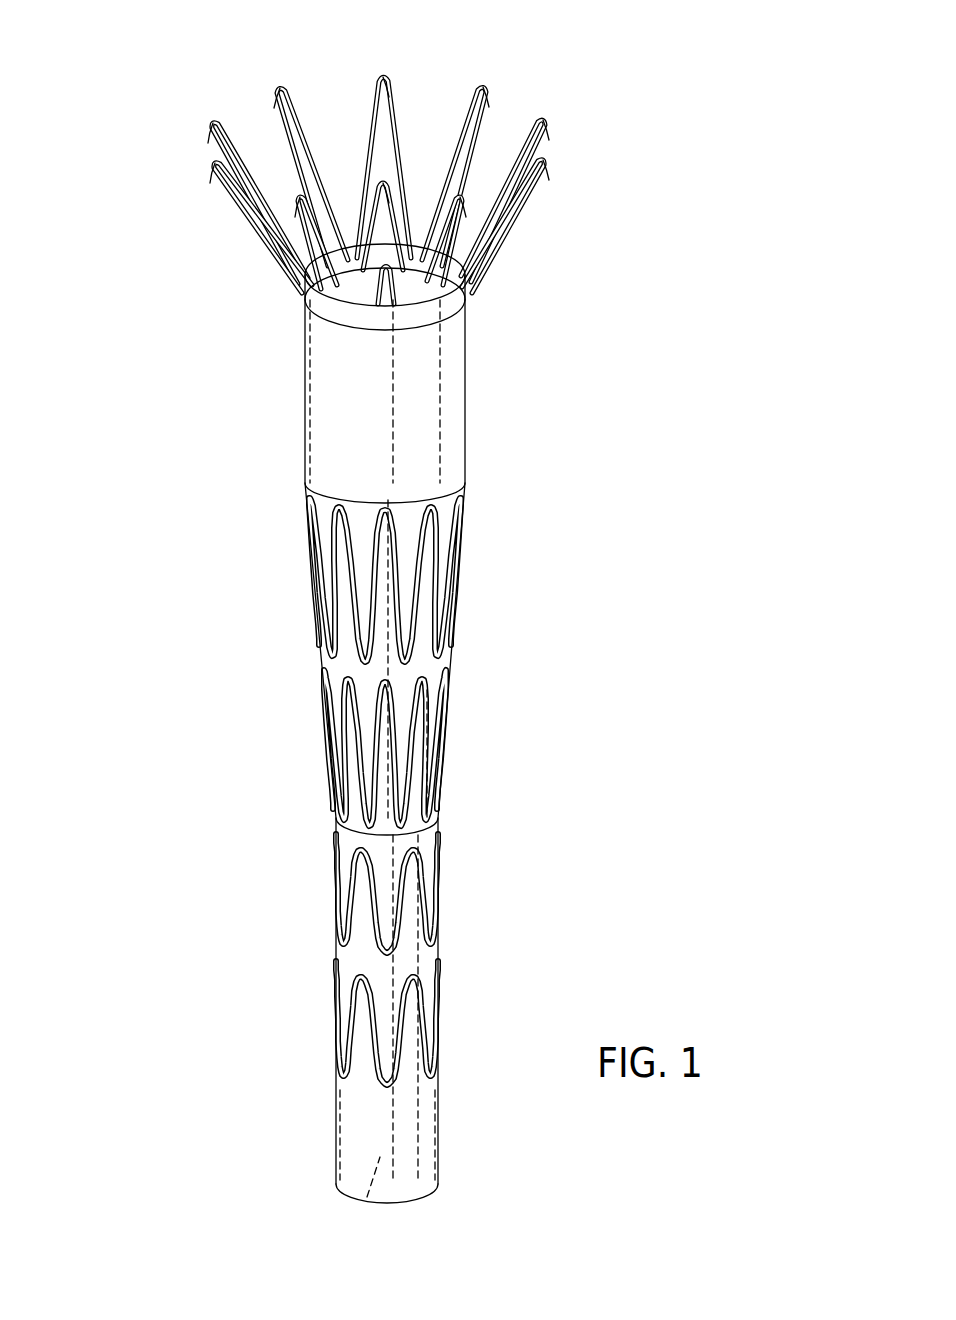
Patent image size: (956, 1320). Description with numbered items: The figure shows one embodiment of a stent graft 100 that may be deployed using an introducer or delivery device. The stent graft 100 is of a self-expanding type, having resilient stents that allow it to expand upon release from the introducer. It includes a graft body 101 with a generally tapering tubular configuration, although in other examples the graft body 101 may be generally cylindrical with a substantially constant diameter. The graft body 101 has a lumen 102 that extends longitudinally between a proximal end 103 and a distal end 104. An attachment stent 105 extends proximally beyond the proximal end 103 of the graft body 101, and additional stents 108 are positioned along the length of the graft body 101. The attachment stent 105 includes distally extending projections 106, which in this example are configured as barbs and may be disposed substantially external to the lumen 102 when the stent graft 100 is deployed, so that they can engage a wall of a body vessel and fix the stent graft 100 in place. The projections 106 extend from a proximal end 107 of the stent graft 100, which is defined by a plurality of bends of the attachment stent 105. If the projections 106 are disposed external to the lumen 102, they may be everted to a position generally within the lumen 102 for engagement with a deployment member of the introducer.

The stent graft 100 is at (148, 95).
The graft body 101 is at (460, 455).
The lumen 102 is at (367, 1197).
The proximal end 103 is at (467, 287).
The distal end 104 is at (442, 1182).
The attachment stent 105 is at (523, 197).
The projections 106 is at (548, 130).
The proximal end 107 is at (483, 85).
The stents 108 is at (437, 580).